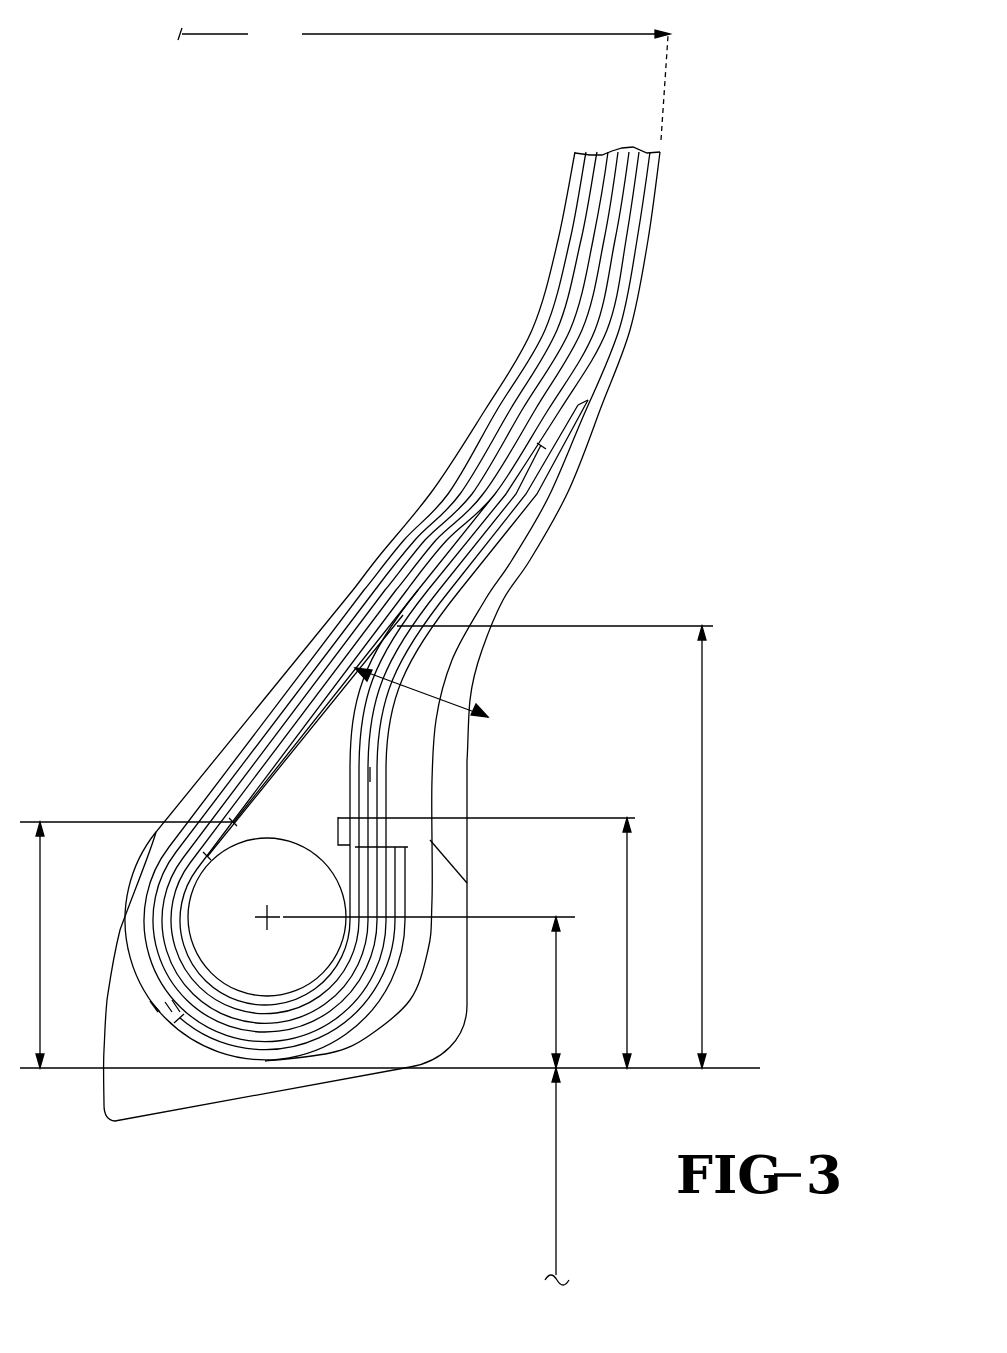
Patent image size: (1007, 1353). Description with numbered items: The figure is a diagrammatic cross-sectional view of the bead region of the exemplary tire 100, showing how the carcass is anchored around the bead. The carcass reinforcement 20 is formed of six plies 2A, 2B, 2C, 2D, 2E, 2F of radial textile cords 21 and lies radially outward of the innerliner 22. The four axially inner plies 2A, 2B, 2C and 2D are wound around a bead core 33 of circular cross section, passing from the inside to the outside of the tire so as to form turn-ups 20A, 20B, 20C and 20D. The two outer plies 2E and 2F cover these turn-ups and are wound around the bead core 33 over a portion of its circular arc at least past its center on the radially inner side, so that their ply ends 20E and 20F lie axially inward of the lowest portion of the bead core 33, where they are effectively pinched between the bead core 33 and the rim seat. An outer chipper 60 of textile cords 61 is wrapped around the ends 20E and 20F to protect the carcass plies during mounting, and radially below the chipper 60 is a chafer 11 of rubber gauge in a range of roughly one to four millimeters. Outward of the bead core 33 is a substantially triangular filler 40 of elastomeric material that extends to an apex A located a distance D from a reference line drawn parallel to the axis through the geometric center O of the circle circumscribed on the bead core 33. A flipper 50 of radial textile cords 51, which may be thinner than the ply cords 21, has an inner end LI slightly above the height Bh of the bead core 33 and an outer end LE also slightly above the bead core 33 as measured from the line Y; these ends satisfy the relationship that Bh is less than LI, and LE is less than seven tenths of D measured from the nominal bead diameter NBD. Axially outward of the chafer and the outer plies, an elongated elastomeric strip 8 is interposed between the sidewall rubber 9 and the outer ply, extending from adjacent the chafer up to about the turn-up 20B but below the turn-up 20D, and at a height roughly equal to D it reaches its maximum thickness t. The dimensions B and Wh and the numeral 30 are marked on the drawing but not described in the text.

The tire 100 is at (336, 458).
The carcass reinforcement 20 is at (203, 745).
The sidewall rubber 9 is at (525, 558).
The elongated strip 8 is at (432, 668).
The chafer 11 is at (387, 1052).
The outer chipper 60 is at (386, 602).
The textile cords 61 is at (325, 1055).
The innerliner 22 is at (460, 462).
The radial textile cords 21 is at (425, 545).
The apex A is at (395, 627).
The axially inner carcass ply 2A is at (585, 220).
The axially inner carcass ply 2B is at (577, 277).
The axially inner carcass ply 2C is at (567, 337).
The axially inner carcass ply 2D is at (560, 397).
The outer carcass ply 2E is at (628, 190).
The outer carcass ply 2F is at (618, 252).
The turn-up 20A is at (372, 800).
The turn-up 20B is at (543, 447).
The turn-up 20C is at (362, 870).
The turn-up 20D is at (583, 405).
The ply end 20E is at (253, 1047).
The ply end 20F is at (177, 1027).
The filler strip 40 is at (335, 720).
The bead core 30 is at (292, 882).
The bead core 33 is at (223, 920).
The flipper 50 is at (194, 1094).
The radial textile cords 51 is at (240, 993).
The geometric center O is at (292, 953).
The height of the bead core Bh is at (267, 838).
The inner end of the flipper LI is at (43, 945).
The outer end of the flipper LE is at (494, 943).
The dimension B is at (429, 992).
The distance D is at (556, 847).
The nominal bead diameter NBD is at (573, 1176).
The maximum thickness t is at (455, 705).
The width Wh is at (424, 40).
The line YY' Y is at (390, 1084).